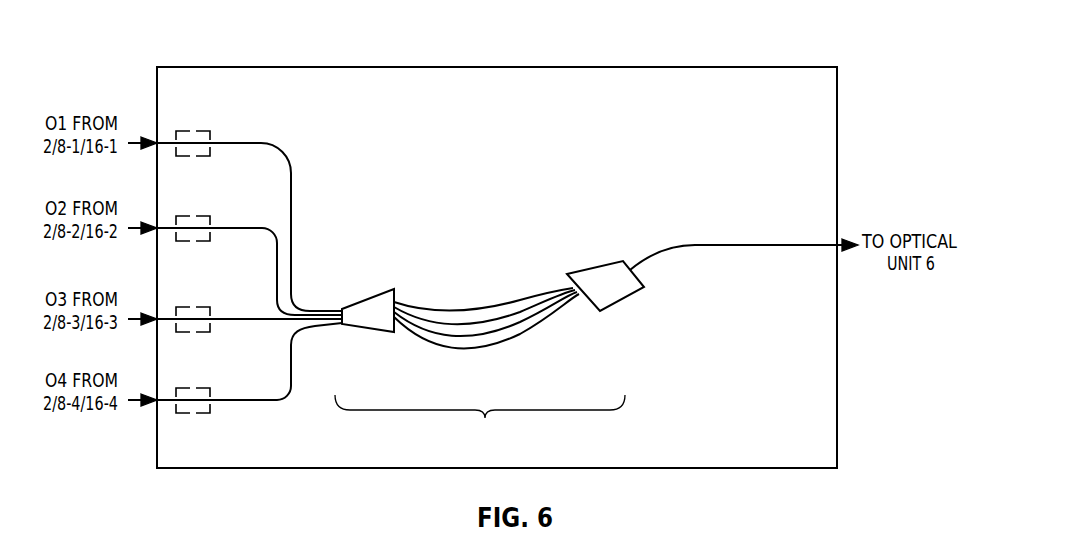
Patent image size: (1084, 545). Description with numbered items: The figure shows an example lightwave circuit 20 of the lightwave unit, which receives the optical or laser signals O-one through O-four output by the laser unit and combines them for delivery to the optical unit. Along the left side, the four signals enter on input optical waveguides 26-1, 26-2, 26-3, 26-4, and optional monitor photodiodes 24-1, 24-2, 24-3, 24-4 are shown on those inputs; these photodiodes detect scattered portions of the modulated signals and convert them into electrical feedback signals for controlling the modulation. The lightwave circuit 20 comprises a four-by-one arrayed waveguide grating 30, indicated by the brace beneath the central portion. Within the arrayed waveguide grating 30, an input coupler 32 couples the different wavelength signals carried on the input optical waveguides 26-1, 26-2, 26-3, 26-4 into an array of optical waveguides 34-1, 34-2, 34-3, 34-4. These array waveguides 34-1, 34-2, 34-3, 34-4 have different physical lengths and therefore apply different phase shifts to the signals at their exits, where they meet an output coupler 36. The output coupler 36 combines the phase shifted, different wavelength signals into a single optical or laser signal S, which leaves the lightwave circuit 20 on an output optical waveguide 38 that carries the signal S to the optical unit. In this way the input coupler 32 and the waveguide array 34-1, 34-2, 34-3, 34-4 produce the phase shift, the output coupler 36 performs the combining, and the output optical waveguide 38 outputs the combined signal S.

The lightwave circuit 20 is at (445, 42).
The monitor photodiode 24-1 is at (182, 131).
The monitor photodiode 24-2 is at (193, 216).
The monitor photodiode 24-3 is at (185, 306).
The monitor photodiode 24-4 is at (185, 387).
The input optical waveguide 26-1 is at (261, 142).
The input optical waveguide 26-2 is at (262, 228).
The input optical waveguide 26-3 is at (289, 310).
The input optical waveguide 26-4 is at (298, 398).
The arrayed waveguide grating 30 is at (480, 421).
The input coupler 32 is at (375, 292).
The optical waveguide 34-1 is at (407, 303).
The optical waveguide 34-2 is at (433, 322).
The optical waveguide 34-3 is at (515, 318).
The optical waveguide 34-4 is at (521, 328).
The output coupler 36 is at (623, 300).
The output optical waveguide 38 is at (753, 243).
The optical or laser signal S is at (850, 242).